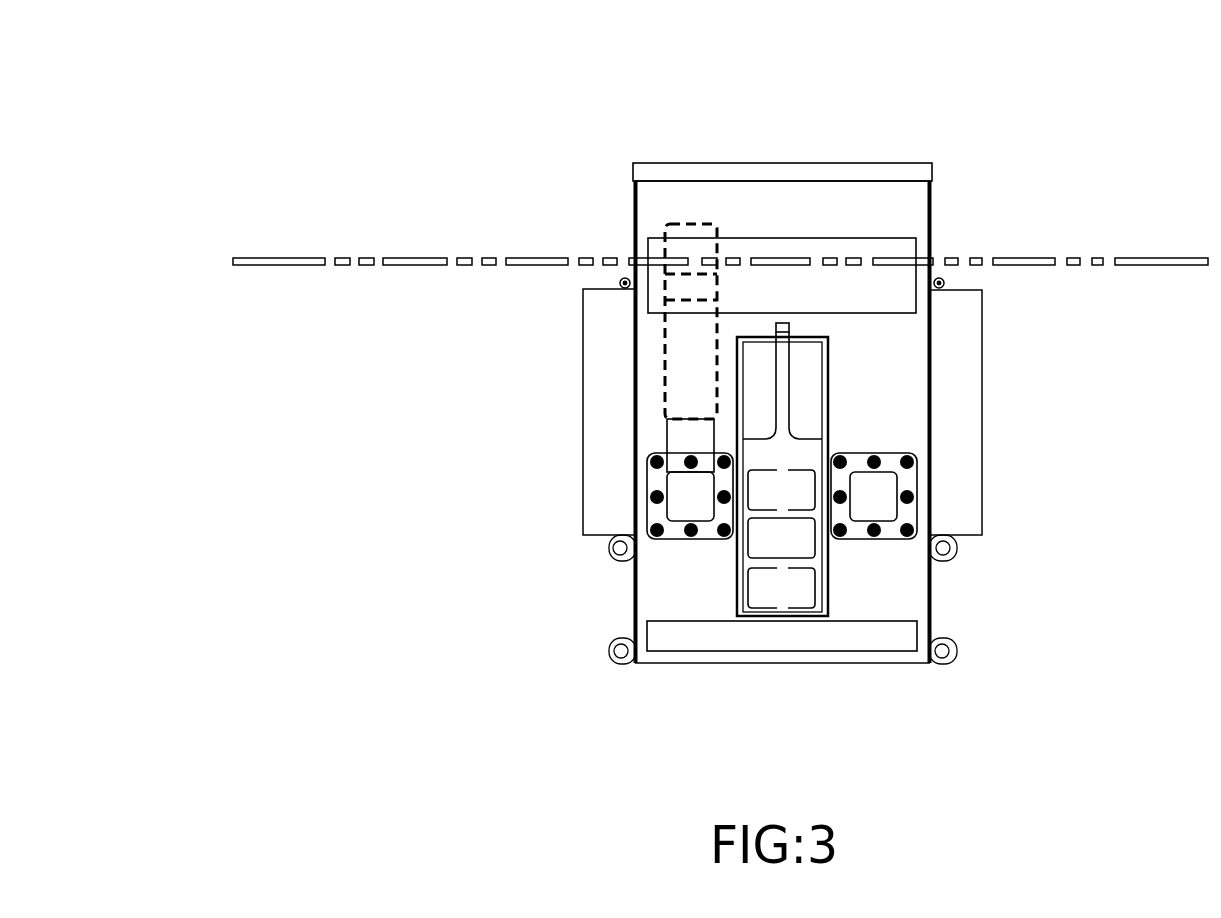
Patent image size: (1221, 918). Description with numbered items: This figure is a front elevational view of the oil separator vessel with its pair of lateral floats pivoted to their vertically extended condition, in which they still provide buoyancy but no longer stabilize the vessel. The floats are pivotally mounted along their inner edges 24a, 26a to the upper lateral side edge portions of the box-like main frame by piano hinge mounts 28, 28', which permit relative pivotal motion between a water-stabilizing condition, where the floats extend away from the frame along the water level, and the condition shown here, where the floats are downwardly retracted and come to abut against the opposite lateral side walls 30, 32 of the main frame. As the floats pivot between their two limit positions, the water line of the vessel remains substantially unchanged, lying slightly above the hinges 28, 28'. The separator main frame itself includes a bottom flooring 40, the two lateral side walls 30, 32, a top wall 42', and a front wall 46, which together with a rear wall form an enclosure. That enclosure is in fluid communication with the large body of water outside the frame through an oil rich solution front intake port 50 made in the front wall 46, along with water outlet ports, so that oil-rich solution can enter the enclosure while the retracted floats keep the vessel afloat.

The inner edge of float 24a is at (982, 291).
The inner edge of float 26a is at (583, 288).
The piano hinge mount 28 is at (1032, 212).
The piano hinge mount 28' is at (496, 212).
The lateral side wall 30 is at (938, 597).
The lateral side wall 32 is at (630, 599).
The bottom flooring 40 is at (785, 665).
The top cover 42' is at (782, 98).
The front wall 46 is at (874, 437).
The oil rich solution front intake port 50 is at (782, 238).